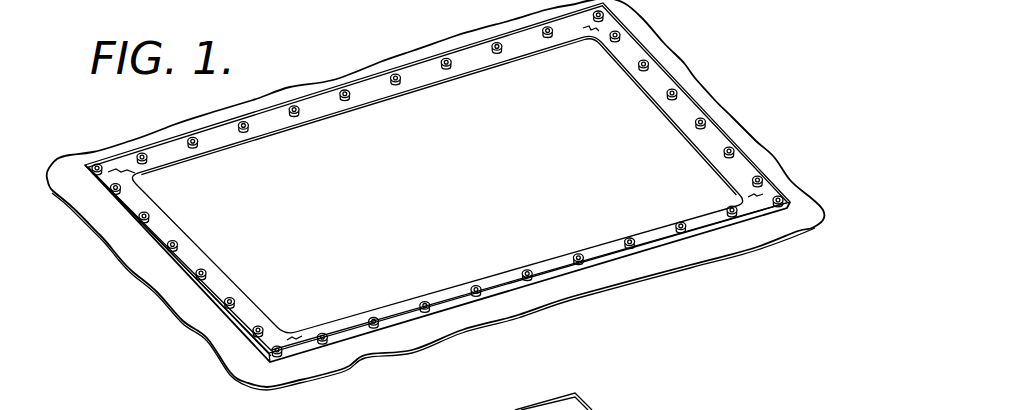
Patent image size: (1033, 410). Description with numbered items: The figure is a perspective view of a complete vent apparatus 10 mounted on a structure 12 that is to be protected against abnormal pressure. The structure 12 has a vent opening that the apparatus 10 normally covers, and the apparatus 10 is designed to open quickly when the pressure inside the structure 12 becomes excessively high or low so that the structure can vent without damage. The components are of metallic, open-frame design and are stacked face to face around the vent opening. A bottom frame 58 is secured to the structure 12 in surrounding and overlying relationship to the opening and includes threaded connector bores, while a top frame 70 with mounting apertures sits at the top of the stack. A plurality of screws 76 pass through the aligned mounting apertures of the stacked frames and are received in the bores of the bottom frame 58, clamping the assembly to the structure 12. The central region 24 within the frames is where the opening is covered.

The vent apparatus 10 is at (695, 30).
The structure 12 is at (757, 232).
The opening 24 is at (437, 184).
The bottom frame 58 is at (343, 341).
The top frame 70 is at (379, 88).
The screws 76 is at (194, 147).